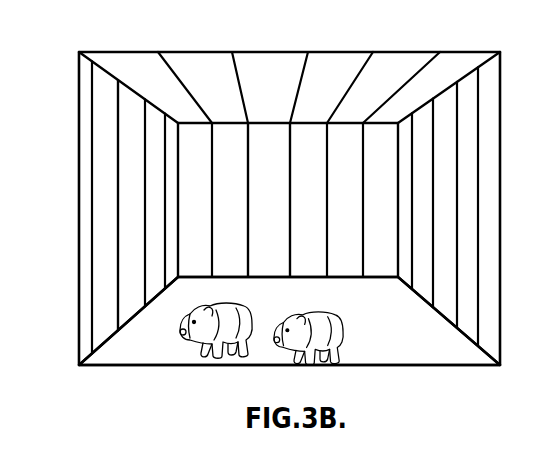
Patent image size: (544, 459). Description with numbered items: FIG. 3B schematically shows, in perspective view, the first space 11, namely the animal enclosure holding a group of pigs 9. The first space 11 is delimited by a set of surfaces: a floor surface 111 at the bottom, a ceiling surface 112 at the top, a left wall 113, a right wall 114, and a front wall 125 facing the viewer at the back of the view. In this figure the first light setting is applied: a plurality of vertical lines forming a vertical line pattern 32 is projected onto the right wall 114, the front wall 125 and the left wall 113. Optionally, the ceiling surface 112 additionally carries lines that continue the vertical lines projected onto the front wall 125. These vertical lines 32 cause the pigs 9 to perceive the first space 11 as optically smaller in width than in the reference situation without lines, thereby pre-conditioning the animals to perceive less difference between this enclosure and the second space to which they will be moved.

The first space 11 is at (491, 51).
The ceiling surface 112 is at (262, 64).
The left wall 113 is at (100, 200).
The right wall 114 is at (476, 185).
The front wall 125 is at (350, 183).
The floor surface 111 is at (396, 350).
The vertical line pattern 32 is at (290, 160).
The pigs 9 is at (255, 318).